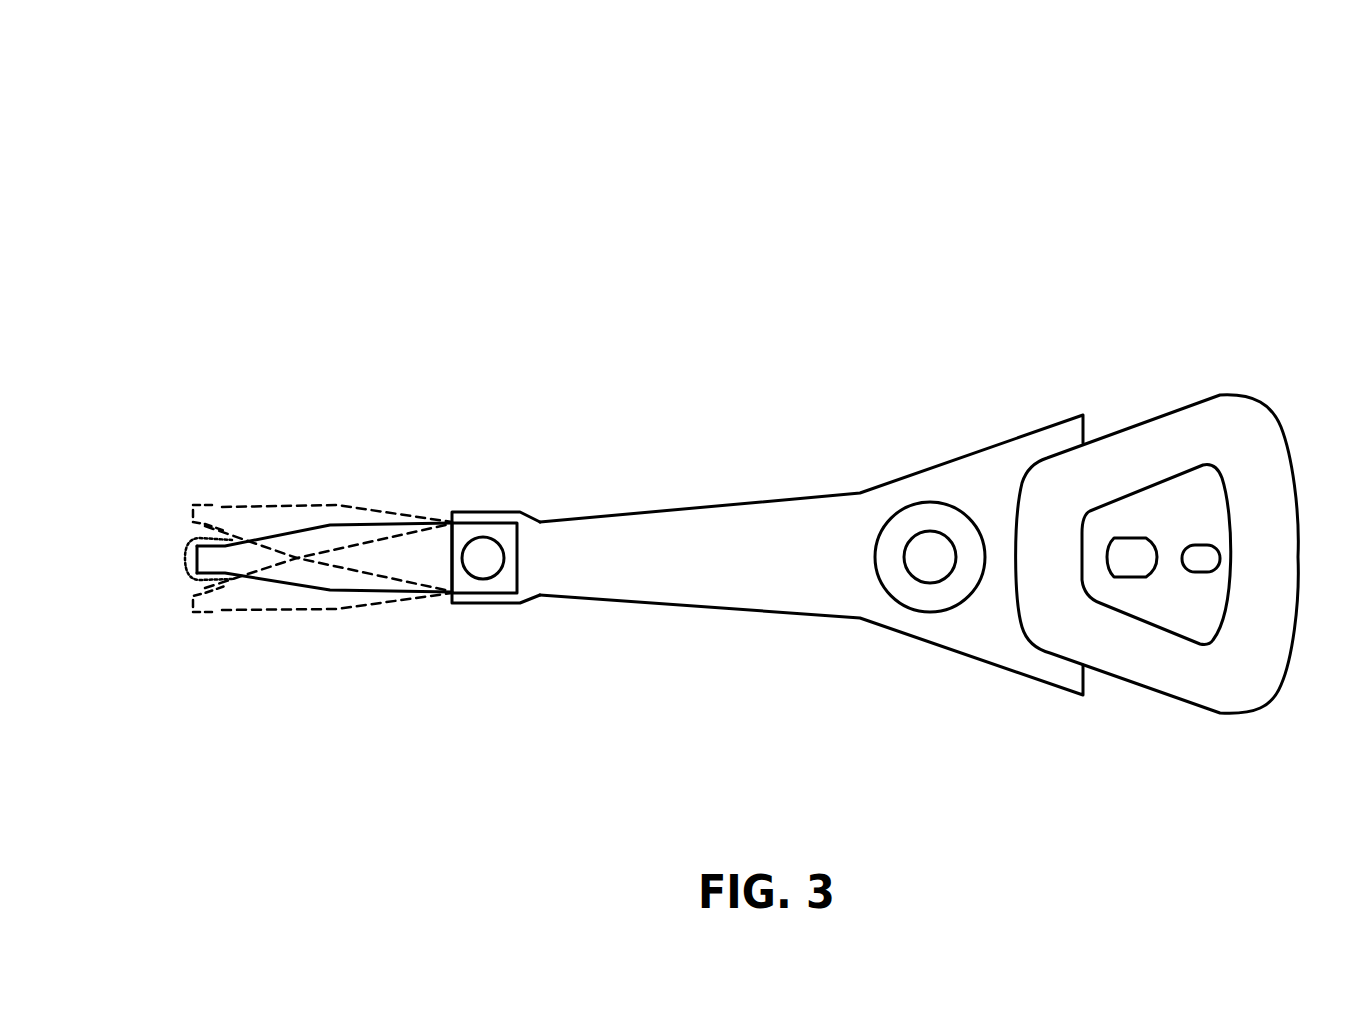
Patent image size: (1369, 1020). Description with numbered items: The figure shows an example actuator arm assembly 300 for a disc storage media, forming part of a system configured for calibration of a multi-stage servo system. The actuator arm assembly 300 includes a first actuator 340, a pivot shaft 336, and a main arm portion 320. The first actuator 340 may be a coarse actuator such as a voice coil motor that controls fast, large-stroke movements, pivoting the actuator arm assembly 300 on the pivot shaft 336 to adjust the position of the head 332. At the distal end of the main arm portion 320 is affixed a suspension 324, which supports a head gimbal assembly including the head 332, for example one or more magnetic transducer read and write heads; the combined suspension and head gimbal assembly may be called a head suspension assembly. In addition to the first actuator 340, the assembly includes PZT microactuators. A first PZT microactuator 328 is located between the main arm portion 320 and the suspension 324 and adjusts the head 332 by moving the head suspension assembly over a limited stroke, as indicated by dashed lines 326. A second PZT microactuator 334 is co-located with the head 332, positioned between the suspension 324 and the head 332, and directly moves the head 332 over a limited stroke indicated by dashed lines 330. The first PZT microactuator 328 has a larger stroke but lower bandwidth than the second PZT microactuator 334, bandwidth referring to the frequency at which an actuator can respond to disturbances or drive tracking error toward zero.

The actuator arm assembly 300 is at (177, 80).
The main arm portion 320 is at (745, 502).
The suspension 324 is at (308, 587).
The dashed lines 326 is at (342, 503).
The first PZT microactuator 328 is at (450, 517).
The dashed lines 330 is at (188, 577).
The head 332 is at (178, 547).
The second PZT microactuator 334 is at (220, 547).
The pivot shaft 336 is at (930, 503).
The first actuator 340 is at (1232, 392).